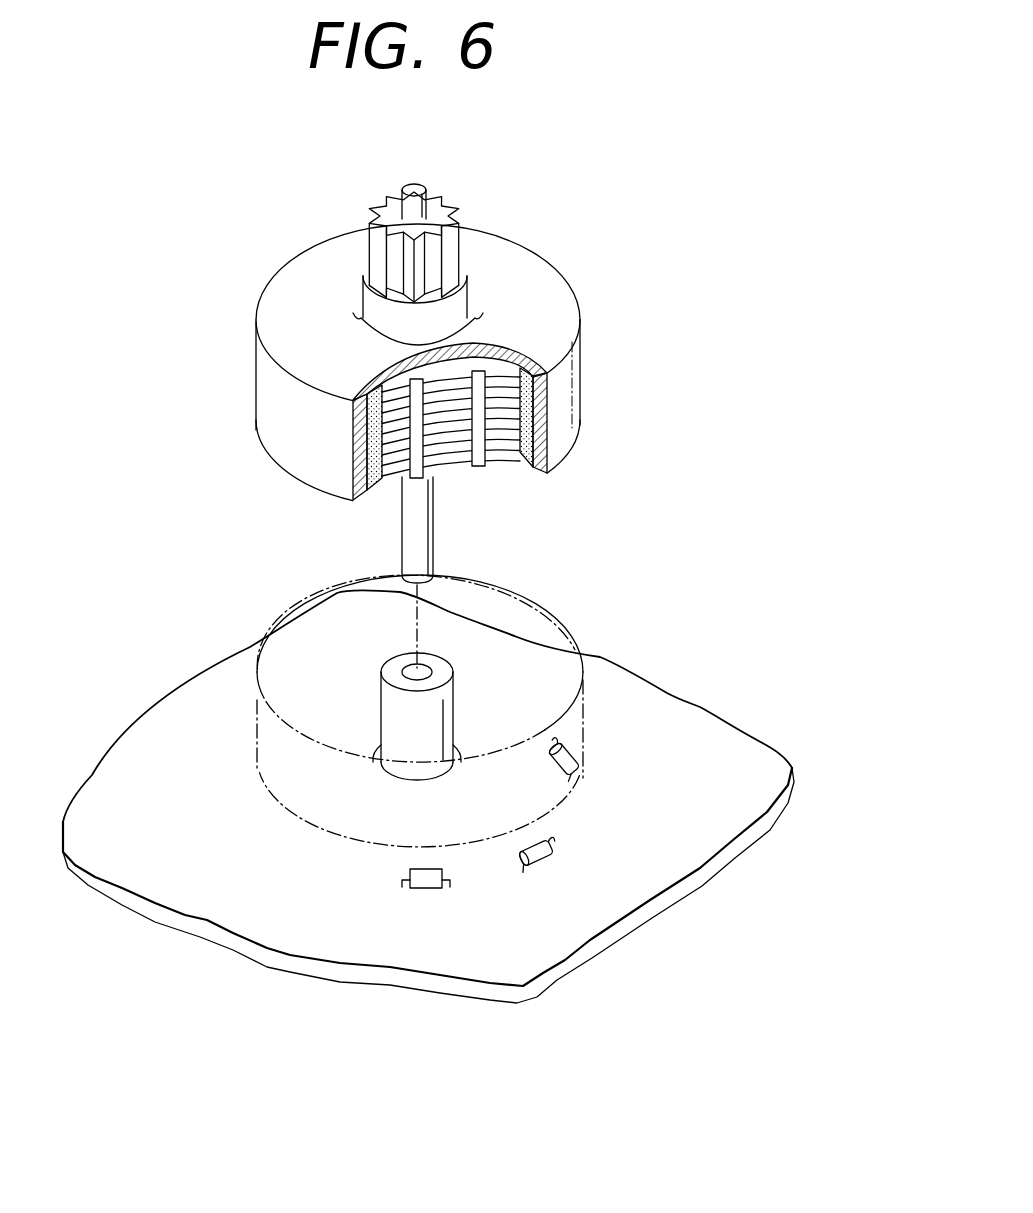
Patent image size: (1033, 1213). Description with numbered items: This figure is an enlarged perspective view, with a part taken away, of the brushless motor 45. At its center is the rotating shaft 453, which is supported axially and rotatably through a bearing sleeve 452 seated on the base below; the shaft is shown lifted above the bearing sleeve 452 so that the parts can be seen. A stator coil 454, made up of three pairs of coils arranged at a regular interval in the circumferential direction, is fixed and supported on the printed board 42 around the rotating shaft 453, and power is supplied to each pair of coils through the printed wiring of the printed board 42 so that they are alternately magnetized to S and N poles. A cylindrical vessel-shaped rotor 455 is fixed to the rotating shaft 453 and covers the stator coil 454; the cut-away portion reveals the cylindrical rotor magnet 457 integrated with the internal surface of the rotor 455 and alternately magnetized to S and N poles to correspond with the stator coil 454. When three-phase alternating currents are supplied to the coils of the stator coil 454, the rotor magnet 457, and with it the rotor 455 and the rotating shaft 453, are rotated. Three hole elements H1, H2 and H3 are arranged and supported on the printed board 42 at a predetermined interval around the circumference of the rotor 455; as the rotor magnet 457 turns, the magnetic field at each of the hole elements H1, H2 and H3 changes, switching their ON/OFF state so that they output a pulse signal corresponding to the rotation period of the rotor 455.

The brushless motor 45 is at (592, 282).
The rotor 455 is at (550, 327).
The rotor magnet 457 is at (540, 420).
The stator coil 454 is at (487, 468).
The rotating shaft 453 is at (405, 537).
The bearing sleeve 452 is at (442, 712).
The printed board 42 is at (677, 713).
The hole element H1 is at (577, 753).
The hole element H2 is at (553, 853).
The hole element H3 is at (427, 888).